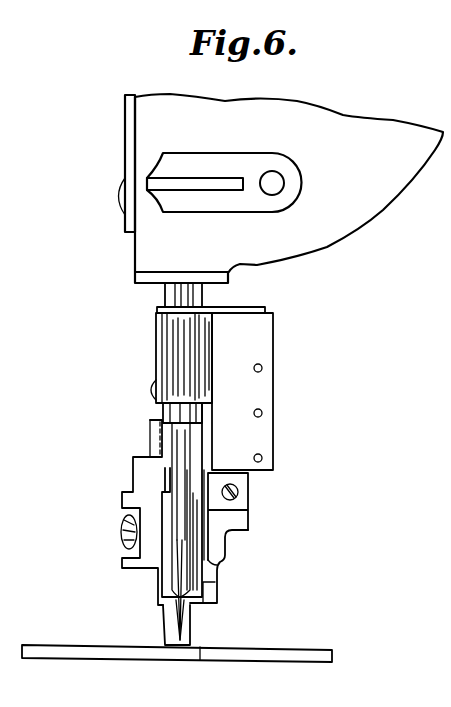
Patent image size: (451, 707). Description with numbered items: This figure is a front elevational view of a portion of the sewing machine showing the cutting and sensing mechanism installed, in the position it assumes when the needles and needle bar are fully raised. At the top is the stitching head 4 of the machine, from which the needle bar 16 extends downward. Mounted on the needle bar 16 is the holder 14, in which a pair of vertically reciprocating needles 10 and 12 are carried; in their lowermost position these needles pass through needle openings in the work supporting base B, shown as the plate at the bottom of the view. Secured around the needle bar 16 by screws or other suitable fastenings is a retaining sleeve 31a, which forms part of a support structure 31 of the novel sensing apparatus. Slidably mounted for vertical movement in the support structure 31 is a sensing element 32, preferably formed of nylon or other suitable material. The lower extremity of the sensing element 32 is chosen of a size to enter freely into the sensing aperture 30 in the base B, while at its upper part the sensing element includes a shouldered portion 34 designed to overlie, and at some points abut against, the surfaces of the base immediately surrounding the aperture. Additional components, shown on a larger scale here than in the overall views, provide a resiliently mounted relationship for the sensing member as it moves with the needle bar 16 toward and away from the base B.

The stitching head 4 is at (343, 222).
The needle bar 16 is at (168, 293).
The retaining sleeve 31a is at (178, 352).
The holder 14 is at (160, 407).
The support structure 31 is at (247, 388).
The shouldered portion 34 is at (236, 518).
The sensing element 32 is at (212, 545).
The needle 10 is at (172, 563).
The needle 12 is at (173, 575).
The sensing aperture 30 is at (223, 653).
The work supporting base B is at (275, 652).